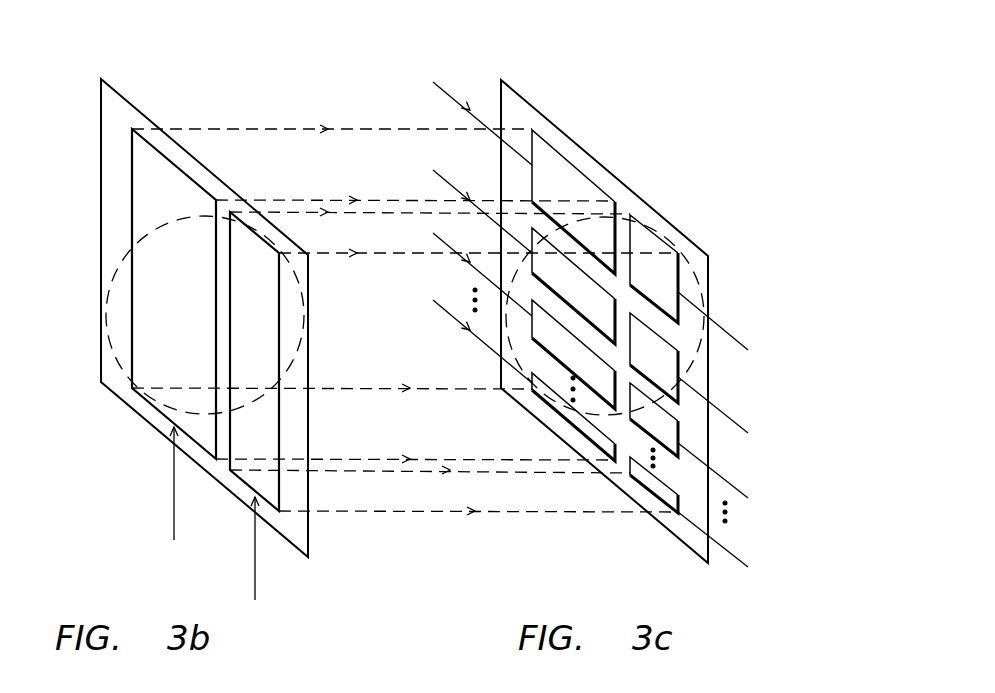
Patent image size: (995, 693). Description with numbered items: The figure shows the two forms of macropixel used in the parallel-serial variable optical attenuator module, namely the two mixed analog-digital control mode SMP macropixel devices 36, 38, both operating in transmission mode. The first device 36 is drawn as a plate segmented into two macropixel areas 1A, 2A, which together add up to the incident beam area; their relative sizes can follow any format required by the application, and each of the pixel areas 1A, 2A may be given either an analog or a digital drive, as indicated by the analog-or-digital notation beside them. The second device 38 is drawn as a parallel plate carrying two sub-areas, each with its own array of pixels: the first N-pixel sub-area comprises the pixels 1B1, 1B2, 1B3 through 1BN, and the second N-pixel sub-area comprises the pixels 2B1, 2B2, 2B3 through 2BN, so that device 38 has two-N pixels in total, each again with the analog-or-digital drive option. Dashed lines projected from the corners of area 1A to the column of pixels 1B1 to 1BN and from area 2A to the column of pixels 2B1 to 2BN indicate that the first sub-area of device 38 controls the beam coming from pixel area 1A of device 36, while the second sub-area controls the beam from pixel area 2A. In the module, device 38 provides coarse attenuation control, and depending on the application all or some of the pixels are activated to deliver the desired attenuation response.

In FIG. 3B, the mixed analog-digital control mode SMP macropixel device 36 is at (308, 436).
In FIG. 3C, the mixed analog-digital control mode SMP macropixel device 38 is at (662, 218).
In FIG. 3B, the macropixel area 1A is at (174, 349).
In FIG. 3B, the macropixel area 2A is at (254, 426).
In FIG. 3C, the pixel 1B1 is at (502, 155).
In FIG. 3C, the pixel 1B2 is at (502, 233).
In FIG. 3C, the pixel 1B3 is at (502, 300).
In FIG. 3C, the pixel 1BN is at (568, 420).
In FIG. 3C, the pixel 2B1 is at (713, 294).
In FIG. 3C, the pixel 2B2 is at (713, 386).
In FIG. 3C, the pixel 2B3 is at (713, 454).
In FIG. 3C, the pixel 2BN is at (652, 492).